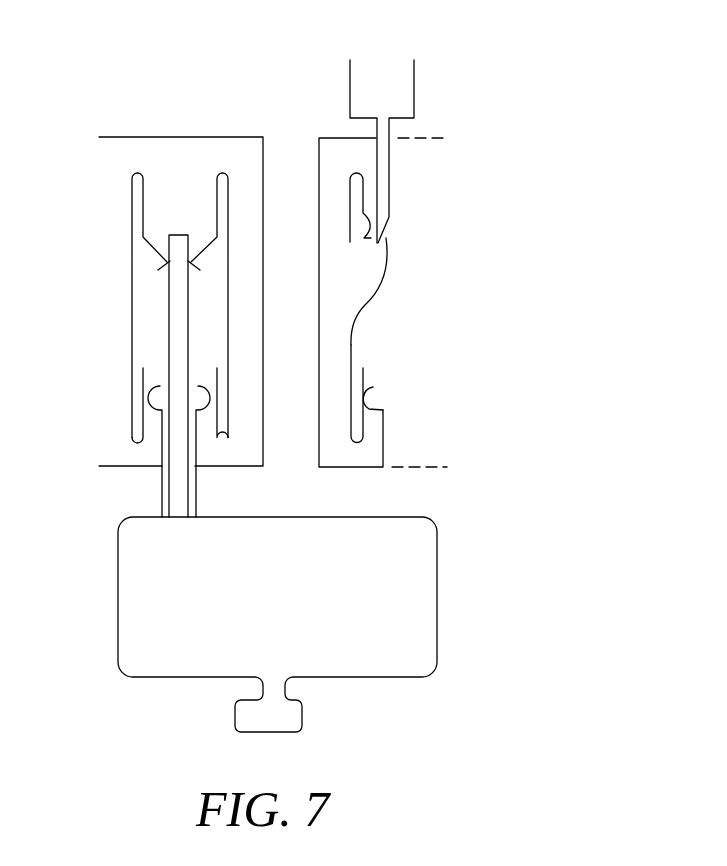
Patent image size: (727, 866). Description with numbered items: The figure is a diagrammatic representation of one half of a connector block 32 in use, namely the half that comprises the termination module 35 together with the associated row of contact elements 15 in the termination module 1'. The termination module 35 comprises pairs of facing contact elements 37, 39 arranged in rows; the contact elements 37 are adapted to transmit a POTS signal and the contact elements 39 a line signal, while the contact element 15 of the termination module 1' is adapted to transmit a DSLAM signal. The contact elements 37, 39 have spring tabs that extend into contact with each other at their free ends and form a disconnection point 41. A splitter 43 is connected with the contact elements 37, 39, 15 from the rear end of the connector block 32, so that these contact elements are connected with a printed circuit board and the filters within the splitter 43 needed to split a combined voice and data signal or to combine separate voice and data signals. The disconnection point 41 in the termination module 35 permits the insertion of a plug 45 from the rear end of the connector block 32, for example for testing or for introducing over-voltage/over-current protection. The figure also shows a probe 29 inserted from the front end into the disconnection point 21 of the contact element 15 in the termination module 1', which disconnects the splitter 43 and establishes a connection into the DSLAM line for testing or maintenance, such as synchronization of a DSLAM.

The termination module 1' is at (399, 272).
The contact element 15 is at (357, 173).
The disconnection point 21 is at (370, 252).
The probe 29 is at (382, 177).
The connector block 32 is at (82, 80).
The termination module 35 is at (98, 242).
The contact element 37 is at (132, 188).
The contact element 39 is at (231, 192).
The disconnection point 41 is at (177, 201).
The splitter 43 is at (293, 607).
The plug 45 is at (178, 326).